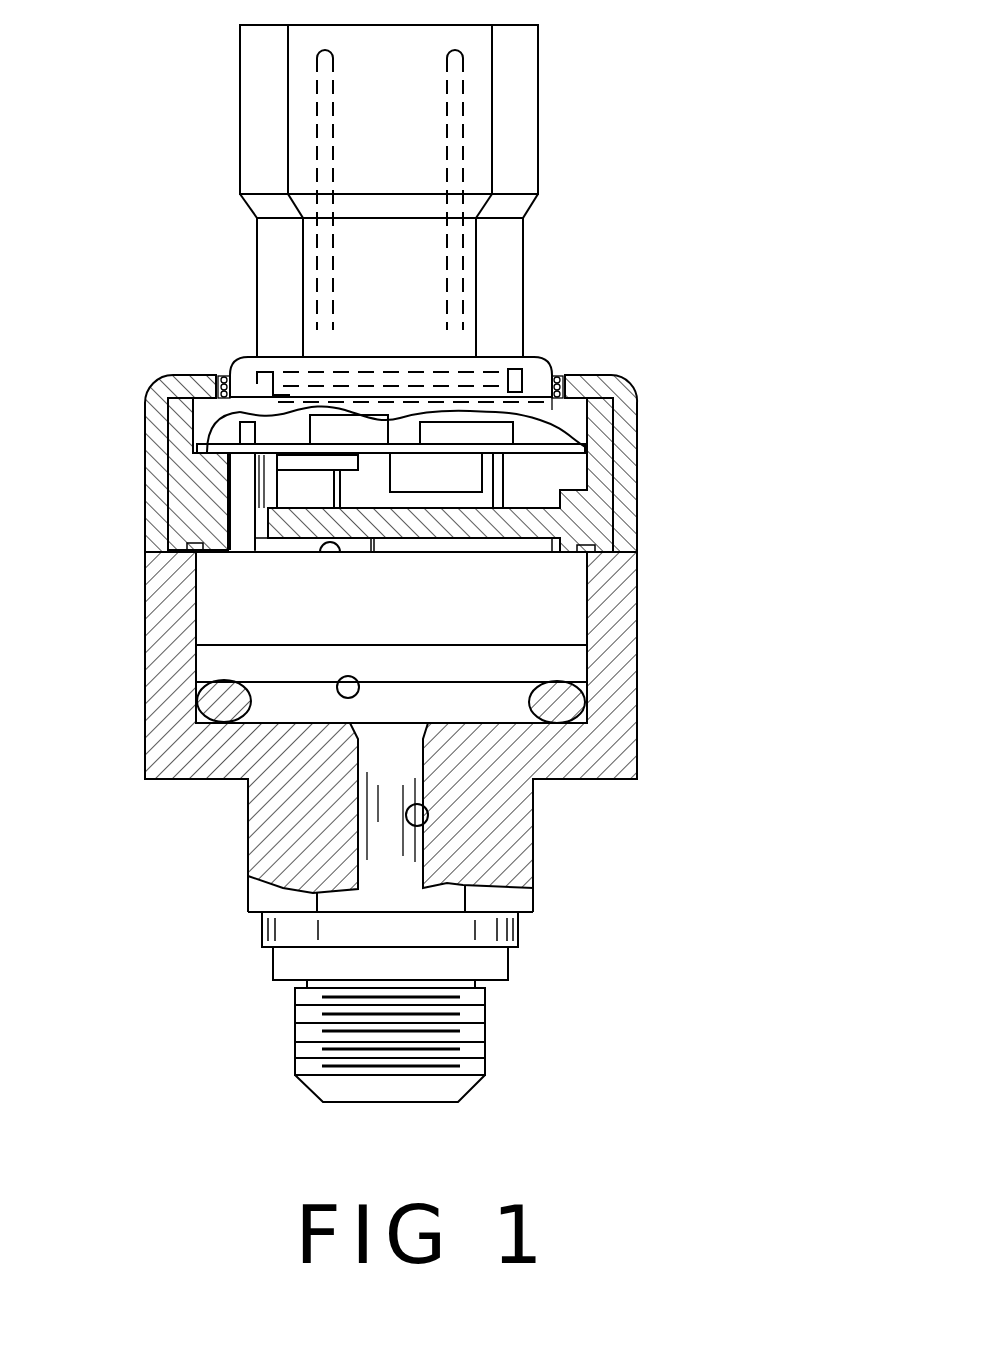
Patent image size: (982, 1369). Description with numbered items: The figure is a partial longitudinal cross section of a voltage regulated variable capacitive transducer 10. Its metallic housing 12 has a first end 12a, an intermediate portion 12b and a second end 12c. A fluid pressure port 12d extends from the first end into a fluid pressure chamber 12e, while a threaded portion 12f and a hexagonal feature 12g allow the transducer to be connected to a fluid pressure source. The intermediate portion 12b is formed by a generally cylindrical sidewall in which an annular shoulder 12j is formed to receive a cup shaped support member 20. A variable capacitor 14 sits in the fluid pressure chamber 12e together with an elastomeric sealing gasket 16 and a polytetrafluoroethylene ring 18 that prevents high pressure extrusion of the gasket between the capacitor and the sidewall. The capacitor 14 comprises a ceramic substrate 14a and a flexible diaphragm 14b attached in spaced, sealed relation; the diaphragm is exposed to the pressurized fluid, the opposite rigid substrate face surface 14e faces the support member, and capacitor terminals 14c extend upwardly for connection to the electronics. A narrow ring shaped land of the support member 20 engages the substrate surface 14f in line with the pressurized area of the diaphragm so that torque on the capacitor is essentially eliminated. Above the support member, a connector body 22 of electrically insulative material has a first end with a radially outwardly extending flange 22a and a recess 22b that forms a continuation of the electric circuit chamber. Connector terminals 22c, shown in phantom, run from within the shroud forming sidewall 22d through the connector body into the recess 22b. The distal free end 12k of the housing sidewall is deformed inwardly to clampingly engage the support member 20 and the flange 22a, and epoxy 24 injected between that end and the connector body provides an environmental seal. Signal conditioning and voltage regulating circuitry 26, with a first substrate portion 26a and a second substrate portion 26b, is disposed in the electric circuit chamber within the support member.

The voltage regulated variable capacitive transducer 10 is at (700, 228).
The metallic housing 12 is at (470, 729).
The first end 12a is at (447, 1088).
The intermediate portion 12b is at (637, 608).
The second end 12c is at (637, 467).
The fluid pressure port 12d is at (427, 803).
The fluid pressure chamber 12e is at (237, 684).
The threaded portion 12f is at (485, 1022).
The hexagonal feature 12g is at (497, 898).
The annular shoulder 12j is at (192, 552).
The distal free end of the sidewall 12k is at (167, 380).
The variable capacitor 14 is at (500, 605).
The substrate 14a is at (548, 575).
The diaphragm 14b is at (538, 662).
The capacitor terminals 14c is at (244, 518).
The rigid substrate face surface 14e is at (336, 683).
The substrate surface 14f is at (341, 550).
The sealing gasket 16 is at (590, 723).
The ring 18 is at (275, 700).
The support member 20 is at (603, 523).
The connector body 22 is at (527, 272).
The flange 22a is at (558, 415).
The recess 22b is at (292, 430).
The connector terminals 22c is at (327, 117).
The shroud forming sidewall 22d is at (517, 137).
The epoxy 24 is at (557, 375).
The signal conditioning and voltage regulating circuitry 26 is at (572, 440).
The first substrate portion 26a is at (520, 452).
The second substrate portion 26b is at (318, 378).